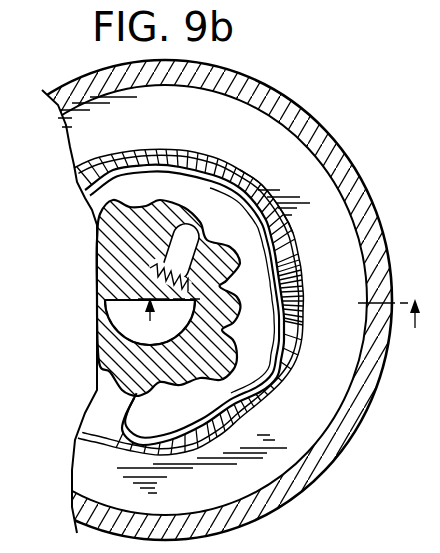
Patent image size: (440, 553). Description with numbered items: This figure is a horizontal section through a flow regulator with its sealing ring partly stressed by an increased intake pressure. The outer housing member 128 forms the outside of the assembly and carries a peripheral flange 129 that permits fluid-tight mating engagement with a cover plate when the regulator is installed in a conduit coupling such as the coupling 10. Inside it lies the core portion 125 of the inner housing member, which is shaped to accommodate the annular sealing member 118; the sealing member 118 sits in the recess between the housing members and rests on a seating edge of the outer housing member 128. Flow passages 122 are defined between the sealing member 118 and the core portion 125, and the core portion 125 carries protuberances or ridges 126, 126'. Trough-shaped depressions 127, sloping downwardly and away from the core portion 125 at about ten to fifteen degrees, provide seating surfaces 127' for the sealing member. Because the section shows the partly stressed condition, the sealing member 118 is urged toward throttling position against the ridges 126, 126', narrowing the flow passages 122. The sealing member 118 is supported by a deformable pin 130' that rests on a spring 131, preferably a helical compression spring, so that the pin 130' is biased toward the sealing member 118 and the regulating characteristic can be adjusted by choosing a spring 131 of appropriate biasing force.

The coupling 10 is at (283, 327).
The annular sealing member 118 is at (260, 243).
The flow passages 122 is at (232, 312).
The core portion 125 is at (88, 283).
The protuberance 126 is at (211, 265).
The protuberance 126' is at (218, 420).
The trough-shaped depression 127 is at (188, 286).
The seating surface 127' is at (264, 190).
The outer housing member 128 is at (347, 256).
The peripheral flange 129 is at (323, 155).
The pin 130' is at (201, 248).
The spring 131 is at (153, 290).